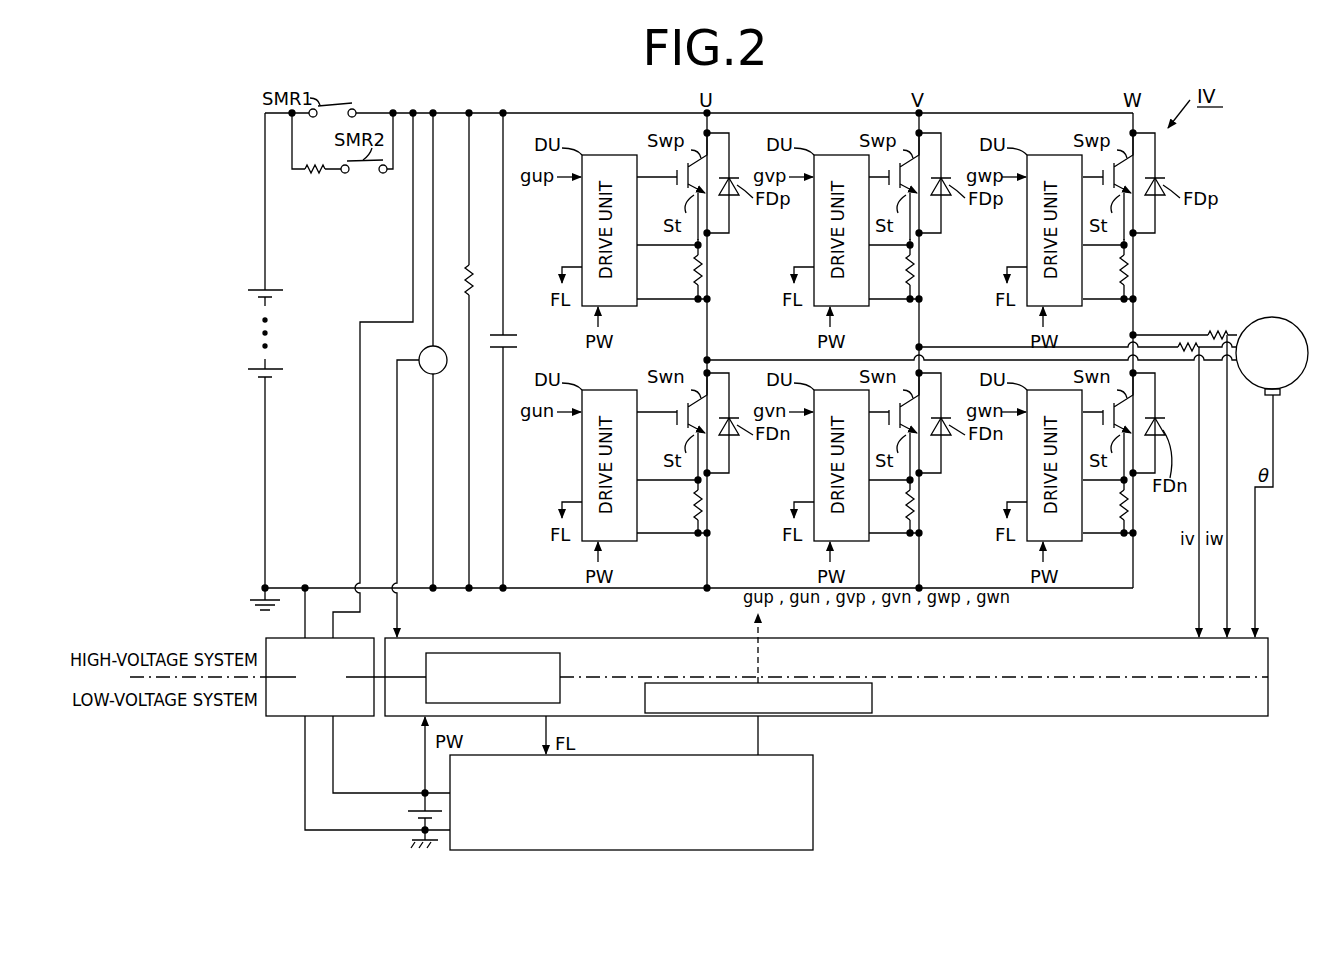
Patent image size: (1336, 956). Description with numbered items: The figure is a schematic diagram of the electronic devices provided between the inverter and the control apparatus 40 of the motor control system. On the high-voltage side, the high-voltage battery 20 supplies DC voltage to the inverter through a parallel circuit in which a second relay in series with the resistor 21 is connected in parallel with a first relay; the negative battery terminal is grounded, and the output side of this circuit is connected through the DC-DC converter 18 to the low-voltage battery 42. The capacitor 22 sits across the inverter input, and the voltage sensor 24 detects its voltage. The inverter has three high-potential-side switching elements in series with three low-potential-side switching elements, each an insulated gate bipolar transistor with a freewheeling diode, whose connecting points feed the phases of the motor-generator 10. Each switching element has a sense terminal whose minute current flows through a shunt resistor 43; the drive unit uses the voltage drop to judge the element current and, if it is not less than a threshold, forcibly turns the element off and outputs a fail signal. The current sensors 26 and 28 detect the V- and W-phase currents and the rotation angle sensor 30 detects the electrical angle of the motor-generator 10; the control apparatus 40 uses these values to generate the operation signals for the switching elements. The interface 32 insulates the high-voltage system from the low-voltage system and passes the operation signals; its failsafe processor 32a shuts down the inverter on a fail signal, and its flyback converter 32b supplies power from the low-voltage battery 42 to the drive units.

The motor-generator 10 is at (1267, 318).
The DC-DC converter 18 is at (284, 717).
The high-voltage battery 20 is at (258, 290).
The resistor 21 is at (316, 176).
The capacitor 22 is at (510, 334).
The voltage sensor 24 is at (441, 347).
The current sensor 26 is at (1196, 378).
The current sensor 28 is at (1229, 392).
The rotation angle sensor 30 is at (1281, 396).
The interface 32 is at (826, 694).
The failsafe processor 32a is at (874, 700).
The flyback converter 32b is at (562, 668).
The control apparatus 40 is at (793, 754).
The low-voltage battery 42 is at (408, 811).
The shunt resistor 43 is at (694, 262).